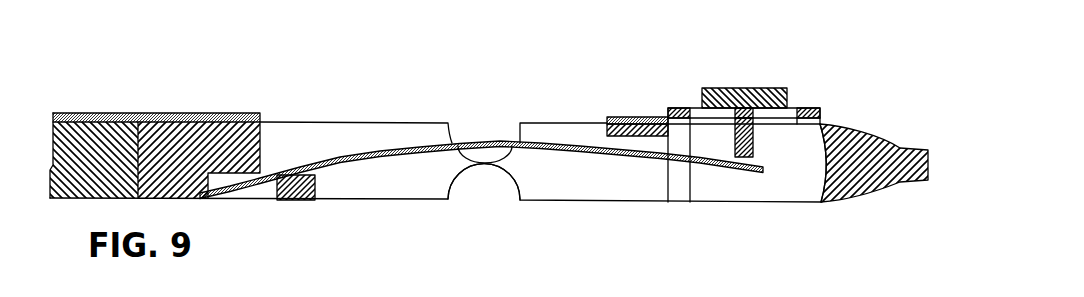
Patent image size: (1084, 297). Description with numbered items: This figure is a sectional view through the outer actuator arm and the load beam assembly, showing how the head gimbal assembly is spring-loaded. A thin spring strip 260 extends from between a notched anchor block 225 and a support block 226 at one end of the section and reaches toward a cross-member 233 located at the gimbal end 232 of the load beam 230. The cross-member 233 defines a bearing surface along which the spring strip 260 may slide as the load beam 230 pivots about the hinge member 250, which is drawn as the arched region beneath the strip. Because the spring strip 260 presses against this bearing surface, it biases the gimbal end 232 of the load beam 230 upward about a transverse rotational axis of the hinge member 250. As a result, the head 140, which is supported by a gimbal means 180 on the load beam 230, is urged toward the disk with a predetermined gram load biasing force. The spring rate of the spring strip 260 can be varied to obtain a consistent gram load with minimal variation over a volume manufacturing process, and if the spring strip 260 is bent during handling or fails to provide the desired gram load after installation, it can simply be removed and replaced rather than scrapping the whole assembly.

The head 140 is at (753, 88).
The gimbal means 180 is at (680, 108).
The notched anchor block 225 is at (262, 141).
The support block 226 is at (317, 178).
The load beam 230 is at (620, 203).
The gimbal end 232 is at (803, 177).
The cross-member 233 is at (752, 143).
The hinge member 250 is at (486, 165).
The spring strip 260 is at (400, 147).